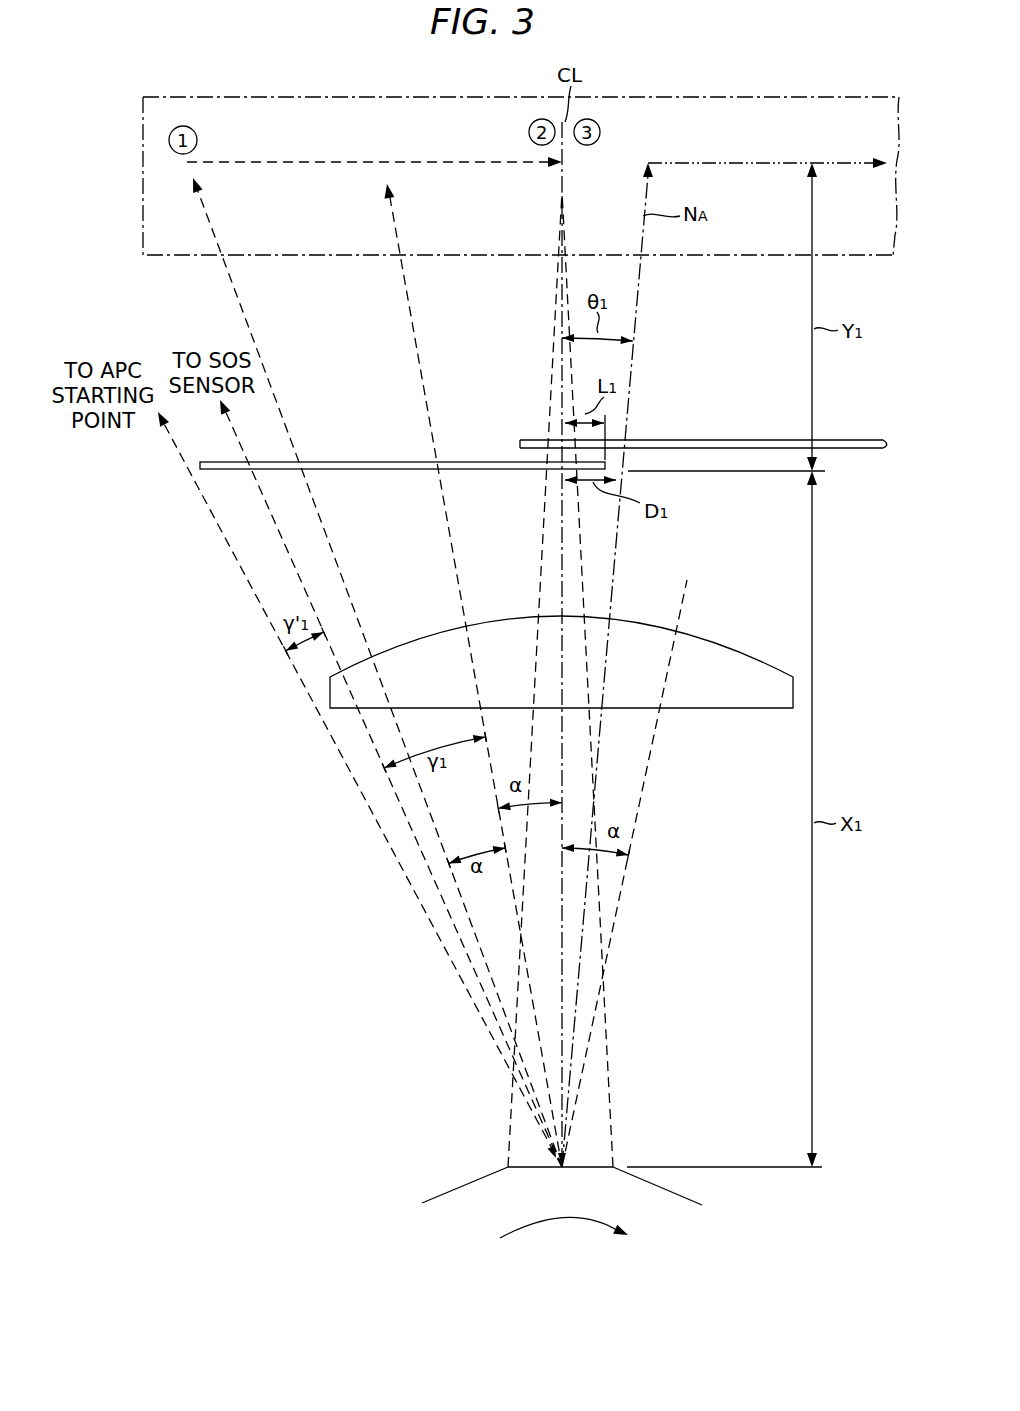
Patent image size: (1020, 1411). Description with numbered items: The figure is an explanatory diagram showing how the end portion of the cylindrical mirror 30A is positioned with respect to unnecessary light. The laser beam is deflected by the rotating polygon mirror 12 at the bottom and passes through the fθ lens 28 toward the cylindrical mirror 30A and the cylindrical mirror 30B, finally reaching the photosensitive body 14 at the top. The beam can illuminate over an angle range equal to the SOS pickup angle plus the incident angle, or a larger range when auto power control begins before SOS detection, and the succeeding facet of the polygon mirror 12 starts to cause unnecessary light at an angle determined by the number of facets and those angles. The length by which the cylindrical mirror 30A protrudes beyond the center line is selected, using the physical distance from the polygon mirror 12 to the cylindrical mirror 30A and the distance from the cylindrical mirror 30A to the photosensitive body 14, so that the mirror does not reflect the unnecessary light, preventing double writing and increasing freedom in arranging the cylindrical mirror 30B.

The polygon mirror 12 is at (690, 1190).
The photosensitive body 14 is at (166, 256).
The fθ lens 28 is at (720, 650).
The cylindrical mirror 30A is at (362, 461).
The cylindrical mirror 30B is at (720, 440).